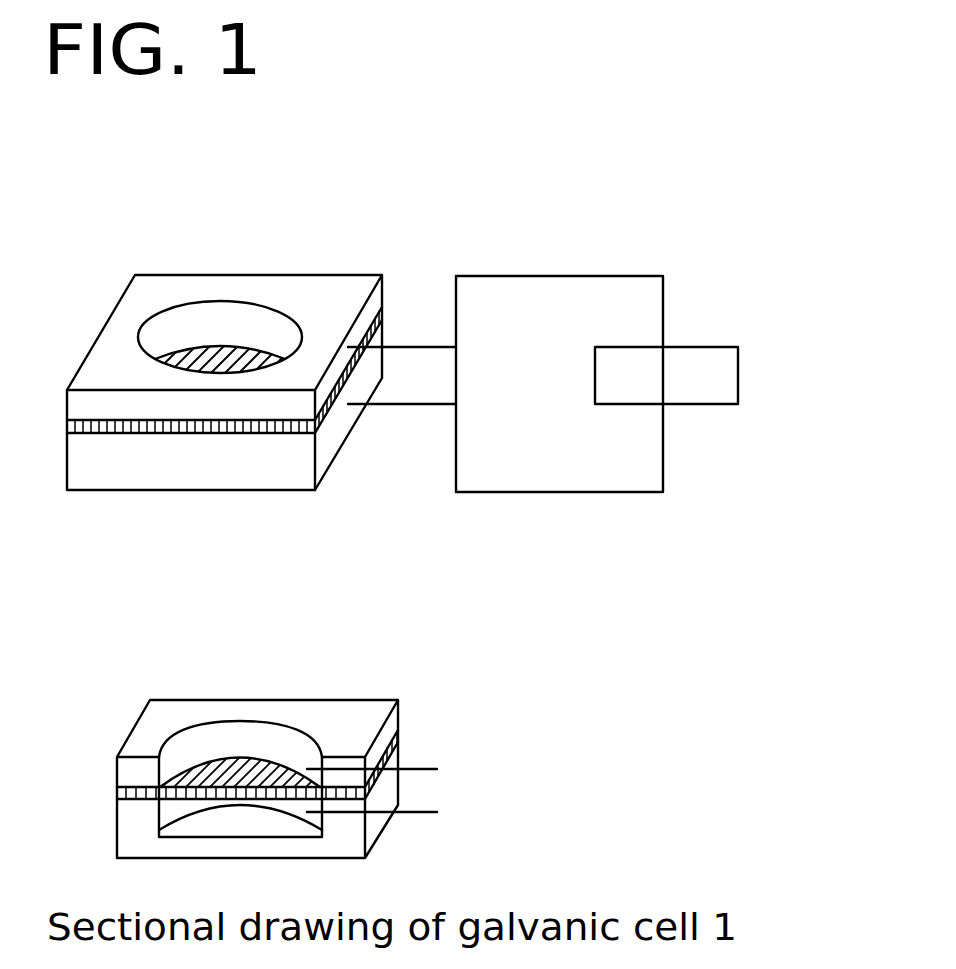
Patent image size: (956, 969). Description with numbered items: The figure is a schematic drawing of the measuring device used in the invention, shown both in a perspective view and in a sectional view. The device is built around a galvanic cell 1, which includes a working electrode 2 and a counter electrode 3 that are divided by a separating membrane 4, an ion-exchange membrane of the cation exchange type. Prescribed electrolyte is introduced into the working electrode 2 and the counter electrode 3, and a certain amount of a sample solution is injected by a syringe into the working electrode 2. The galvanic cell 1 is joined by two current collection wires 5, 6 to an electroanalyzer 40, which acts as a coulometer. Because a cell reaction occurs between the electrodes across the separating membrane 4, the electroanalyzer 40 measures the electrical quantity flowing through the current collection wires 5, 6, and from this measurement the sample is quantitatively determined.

The galvanic cell 1 is at (108, 316).
The working electrode 2 is at (227, 733).
The counter electrode 3 is at (168, 810).
The separating membrane 4 is at (117, 793).
The current collection wire 5 is at (517, 276).
The current collection wire 6 is at (540, 492).
The electroanalyzer 40 is at (738, 390).